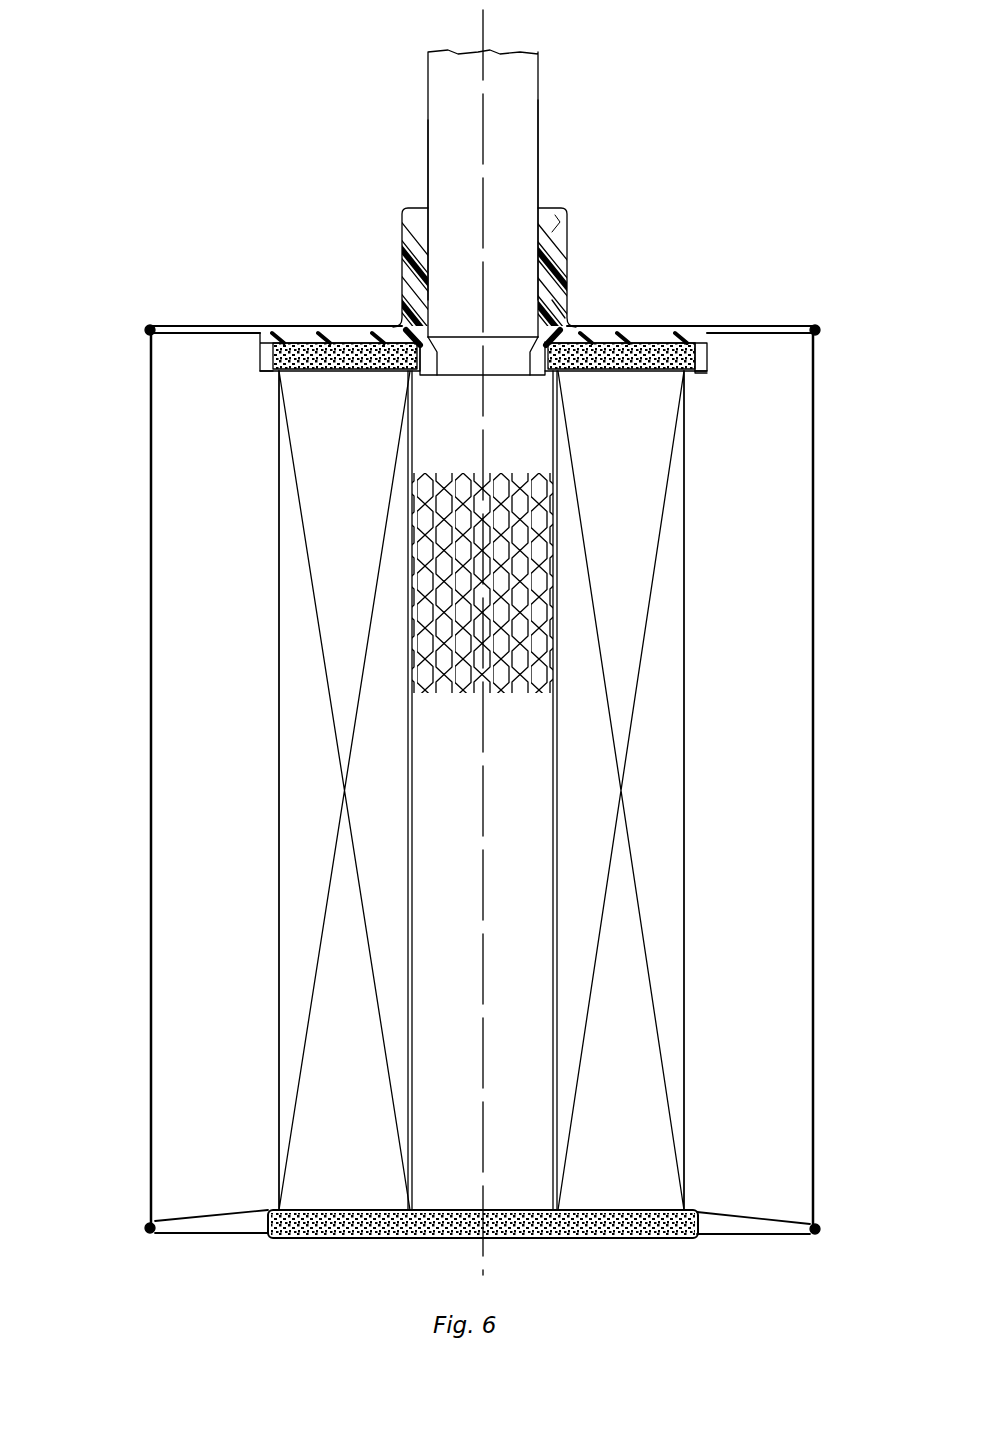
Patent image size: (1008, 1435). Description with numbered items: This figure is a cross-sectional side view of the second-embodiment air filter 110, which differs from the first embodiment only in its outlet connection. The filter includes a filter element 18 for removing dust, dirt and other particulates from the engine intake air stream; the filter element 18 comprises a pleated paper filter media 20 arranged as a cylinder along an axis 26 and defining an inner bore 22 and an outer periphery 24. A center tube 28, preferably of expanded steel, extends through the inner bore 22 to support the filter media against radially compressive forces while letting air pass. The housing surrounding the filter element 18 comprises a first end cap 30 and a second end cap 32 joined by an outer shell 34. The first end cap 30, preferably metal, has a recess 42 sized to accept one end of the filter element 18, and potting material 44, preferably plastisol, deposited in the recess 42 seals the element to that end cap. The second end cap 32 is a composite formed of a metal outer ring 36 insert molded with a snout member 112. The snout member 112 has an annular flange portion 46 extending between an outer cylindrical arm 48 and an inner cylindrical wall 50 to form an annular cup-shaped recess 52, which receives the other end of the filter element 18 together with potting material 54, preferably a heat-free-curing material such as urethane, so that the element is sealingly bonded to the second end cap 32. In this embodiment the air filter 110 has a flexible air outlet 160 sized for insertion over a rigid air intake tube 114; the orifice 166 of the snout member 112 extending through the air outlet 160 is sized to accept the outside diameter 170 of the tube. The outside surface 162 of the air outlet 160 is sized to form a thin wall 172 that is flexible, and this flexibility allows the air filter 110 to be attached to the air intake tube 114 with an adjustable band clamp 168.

The filter element 18 is at (665, 815).
The filter media 20 is at (400, 807).
The inner bore 22 is at (412, 1008).
The outer periphery 24 is at (278, 905).
The axis 26 is at (483, 30).
The center tube 28 is at (540, 638).
The first end cap 30 is at (720, 1228).
The second end cap 32 is at (795, 325).
The outer shell 34 is at (813, 585).
The outer ring 36 is at (255, 328).
The recess 42 is at (452, 1208).
The potting material 44 is at (505, 1208).
The annular flange portion 46 is at (627, 327).
The outer cylindrical arm 48 is at (700, 362).
The inner cylindrical wall 50 is at (540, 373).
The cup-shaped recess 52 is at (630, 377).
The potting material 54 is at (588, 372).
The air filter 110 is at (150, 730).
The snout member 112 is at (555, 318).
The rigid air intake tube 114 is at (523, 100).
The flexible air outlet 160 is at (562, 222).
The outside surface 162 is at (400, 228).
The orifice 166 is at (427, 210).
The adjustable band clamp 168 is at (565, 302).
The outside diameter 170 is at (539, 148).
The thin wall 172 is at (413, 290).